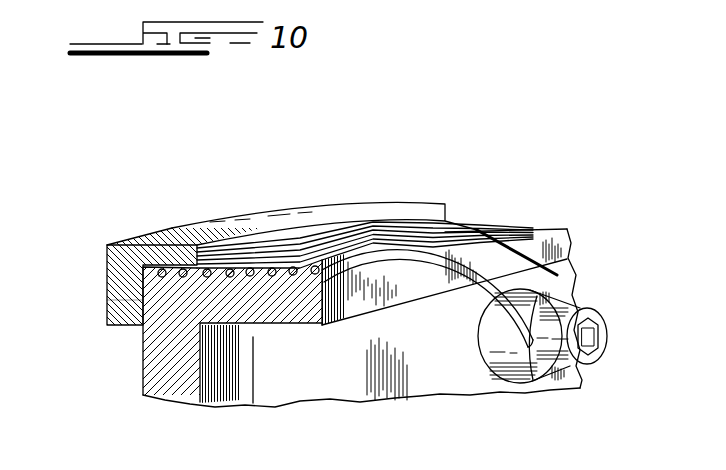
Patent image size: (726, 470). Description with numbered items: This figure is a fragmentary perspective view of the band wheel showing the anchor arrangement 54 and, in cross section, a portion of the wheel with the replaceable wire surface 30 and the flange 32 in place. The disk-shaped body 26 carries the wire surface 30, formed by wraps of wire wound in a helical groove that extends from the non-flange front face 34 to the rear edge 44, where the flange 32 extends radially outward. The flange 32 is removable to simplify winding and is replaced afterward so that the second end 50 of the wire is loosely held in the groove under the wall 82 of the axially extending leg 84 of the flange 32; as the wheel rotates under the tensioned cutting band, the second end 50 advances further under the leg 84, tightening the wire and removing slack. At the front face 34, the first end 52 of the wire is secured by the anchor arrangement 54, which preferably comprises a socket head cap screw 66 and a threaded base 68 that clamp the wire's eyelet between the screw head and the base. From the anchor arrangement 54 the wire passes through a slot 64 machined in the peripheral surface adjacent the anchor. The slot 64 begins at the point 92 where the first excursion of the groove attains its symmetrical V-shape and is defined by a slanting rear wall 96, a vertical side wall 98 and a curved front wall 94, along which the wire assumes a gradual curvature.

The disk-shaped body 26 is at (158, 374).
The wire surface 30 is at (300, 248).
The flange 32 is at (105, 261).
The non-flange front face 34 is at (350, 303).
The rear edge 44 is at (108, 308).
The second end 50 is at (161, 268).
The first end 52 is at (510, 328).
The anchor arrangement 54 is at (524, 398).
The slot 64 is at (488, 265).
The socket head cap screw 66 is at (600, 316).
The threaded base 68 is at (555, 373).
The wall 82 is at (180, 268).
The axially extending leg 84 is at (160, 250).
The point 92 is at (484, 236).
The front wall 94 is at (433, 268).
The slanting rear wall 96 is at (538, 257).
The vertical side wall 98 is at (443, 253).